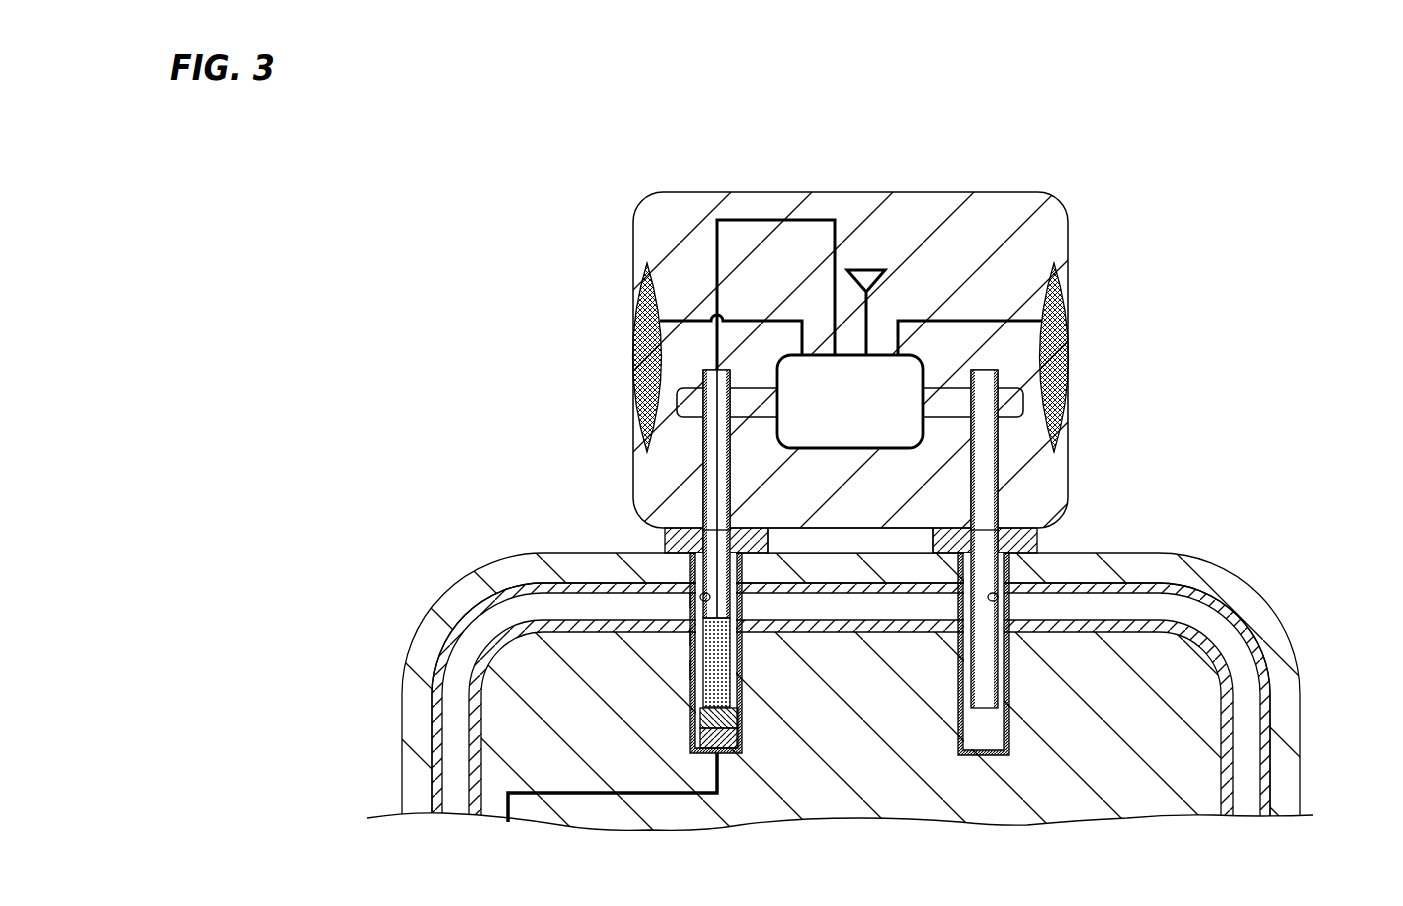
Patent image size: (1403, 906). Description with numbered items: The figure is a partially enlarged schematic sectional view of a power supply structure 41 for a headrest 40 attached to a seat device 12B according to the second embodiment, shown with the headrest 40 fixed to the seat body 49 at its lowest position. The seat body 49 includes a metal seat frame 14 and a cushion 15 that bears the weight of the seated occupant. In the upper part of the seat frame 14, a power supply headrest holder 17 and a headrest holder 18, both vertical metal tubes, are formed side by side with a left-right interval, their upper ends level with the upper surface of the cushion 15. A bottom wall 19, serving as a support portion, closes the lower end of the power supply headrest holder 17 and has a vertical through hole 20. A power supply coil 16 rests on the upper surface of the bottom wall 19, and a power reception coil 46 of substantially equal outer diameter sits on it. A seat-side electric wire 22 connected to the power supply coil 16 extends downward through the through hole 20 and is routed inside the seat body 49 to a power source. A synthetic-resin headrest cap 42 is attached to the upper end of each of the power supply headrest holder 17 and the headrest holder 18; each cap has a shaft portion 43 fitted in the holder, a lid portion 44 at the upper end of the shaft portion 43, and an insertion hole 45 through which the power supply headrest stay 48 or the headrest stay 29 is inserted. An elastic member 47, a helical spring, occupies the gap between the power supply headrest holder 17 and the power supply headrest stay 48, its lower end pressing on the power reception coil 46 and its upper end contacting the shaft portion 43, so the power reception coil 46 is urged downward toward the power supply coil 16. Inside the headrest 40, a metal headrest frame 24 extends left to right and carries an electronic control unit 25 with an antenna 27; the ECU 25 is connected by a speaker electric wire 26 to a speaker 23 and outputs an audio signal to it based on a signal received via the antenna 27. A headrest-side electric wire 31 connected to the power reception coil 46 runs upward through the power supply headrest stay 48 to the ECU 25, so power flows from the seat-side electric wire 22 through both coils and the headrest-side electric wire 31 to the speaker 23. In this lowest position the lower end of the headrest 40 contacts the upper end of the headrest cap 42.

The seat device 12B is at (867, 503).
The seat frame 14 is at (872, 706).
The cushion 15 is at (1197, 572).
The power supply coil 16 is at (692, 710).
The power supply headrest holder 17 is at (690, 600).
The headrest holder 18 is at (1012, 690).
The bottom wall 19 is at (722, 722).
The through hole 20 is at (720, 757).
The seat-side electric wire 22 is at (540, 793).
The speaker 23 is at (640, 332).
The headrest frame 24 is at (1030, 389).
The electronic control unit 25 is at (921, 370).
The speaker electric wire 26 is at (692, 321).
The antenna 27 is at (868, 308).
The headrest stay 29 is at (1003, 475).
The headrest-side electric wire 31 is at (767, 220).
The headrest 40 is at (1053, 247).
The power supply structure 41 is at (799, 666).
The headrest cap 42 is at (776, 620).
The shaft portion 43 is at (692, 555).
The lid portion 44 is at (702, 556).
The insertion hole 45 is at (702, 595).
The power reception coil 46 is at (692, 670).
The elastic member 47 is at (692, 637).
The power supply headrest stay 48 is at (702, 472).
The seat body 49 is at (878, 671).